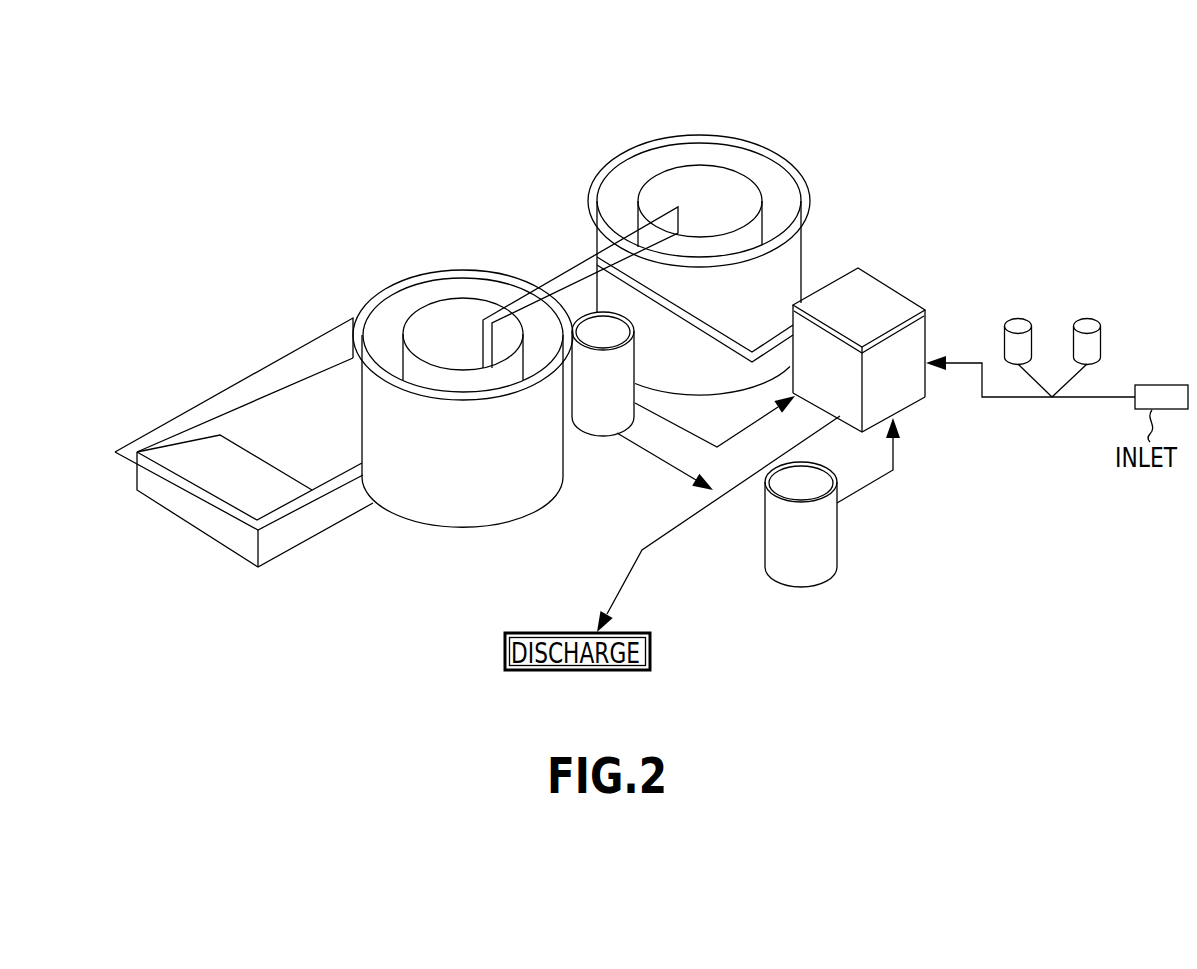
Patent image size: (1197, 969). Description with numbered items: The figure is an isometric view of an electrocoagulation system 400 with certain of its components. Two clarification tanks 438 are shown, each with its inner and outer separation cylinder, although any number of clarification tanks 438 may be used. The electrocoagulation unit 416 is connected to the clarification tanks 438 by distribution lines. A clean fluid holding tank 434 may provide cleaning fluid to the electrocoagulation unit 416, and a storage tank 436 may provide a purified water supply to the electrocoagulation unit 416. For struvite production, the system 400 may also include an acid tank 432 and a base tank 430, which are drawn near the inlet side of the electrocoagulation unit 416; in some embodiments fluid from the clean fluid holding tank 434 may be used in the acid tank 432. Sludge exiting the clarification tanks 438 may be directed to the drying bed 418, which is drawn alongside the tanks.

The system 400 is at (867, 123).
The electrocoagulation unit 416 is at (895, 297).
The drying bed 418 is at (265, 383).
The base tank 430 is at (1020, 318).
The acid tank 432 is at (1093, 318).
The clean fluid holding tank 434 is at (825, 563).
The storage tank 436 is at (595, 420).
The clarification tank 438 is at (642, 113).